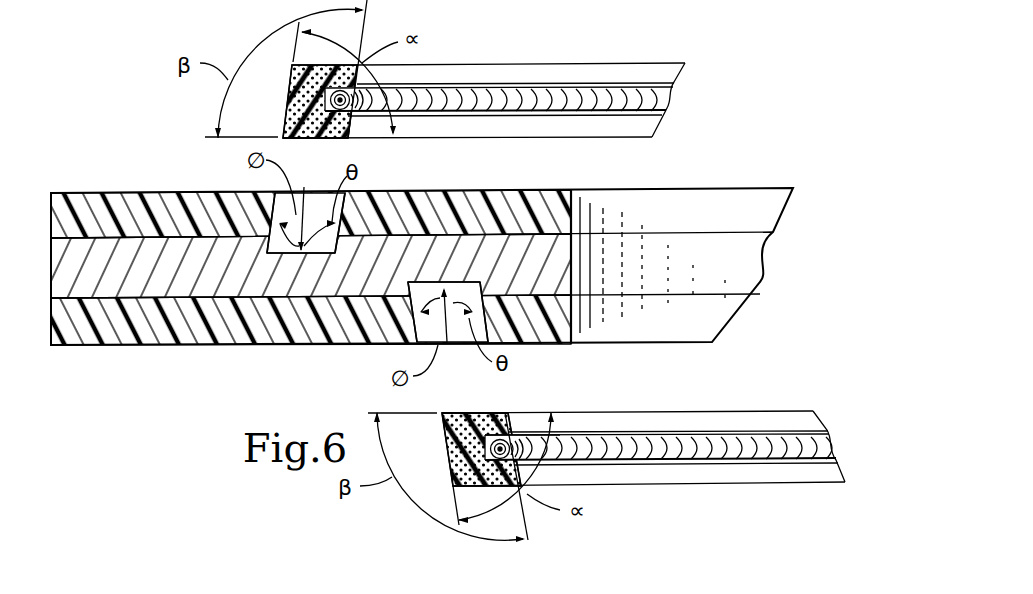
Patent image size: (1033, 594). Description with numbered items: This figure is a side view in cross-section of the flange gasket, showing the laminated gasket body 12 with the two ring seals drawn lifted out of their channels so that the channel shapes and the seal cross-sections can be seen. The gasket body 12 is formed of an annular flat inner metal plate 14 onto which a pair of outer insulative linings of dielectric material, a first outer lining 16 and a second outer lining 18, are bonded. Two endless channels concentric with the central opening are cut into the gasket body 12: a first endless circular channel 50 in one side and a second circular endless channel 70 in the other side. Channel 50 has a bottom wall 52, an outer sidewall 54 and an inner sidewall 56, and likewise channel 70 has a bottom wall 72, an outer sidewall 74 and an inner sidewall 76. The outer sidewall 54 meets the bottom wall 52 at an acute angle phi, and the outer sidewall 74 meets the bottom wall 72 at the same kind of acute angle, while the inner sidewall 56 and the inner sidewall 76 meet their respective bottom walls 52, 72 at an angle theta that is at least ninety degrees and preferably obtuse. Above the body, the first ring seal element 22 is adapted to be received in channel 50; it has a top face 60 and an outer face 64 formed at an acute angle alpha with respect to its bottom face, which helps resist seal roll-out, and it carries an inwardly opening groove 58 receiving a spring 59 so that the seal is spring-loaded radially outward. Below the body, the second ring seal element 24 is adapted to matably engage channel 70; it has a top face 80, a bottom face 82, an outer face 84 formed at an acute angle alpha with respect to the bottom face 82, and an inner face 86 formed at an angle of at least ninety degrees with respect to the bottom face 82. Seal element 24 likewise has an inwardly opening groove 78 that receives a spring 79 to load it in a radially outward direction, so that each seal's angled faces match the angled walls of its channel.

The laminated gasket body 12 is at (185, 175).
The inner metal plate 14 is at (110, 283).
The first outer lining 16 is at (112, 205).
The second outer lining 18 is at (180, 332).
The first ring seal element 22 is at (468, 78).
The second ring seal element 24 is at (633, 470).
The first endless circular channel 50 is at (308, 187).
The bottom wall 52 is at (311, 257).
The outer sidewall 54 is at (263, 190).
The inner sidewall 56 is at (378, 192).
The inwardly opening groove 58 is at (538, 85).
The spring 59 is at (603, 88).
The top face 60 is at (296, 45).
The outer face 64 is at (290, 100).
The second circular endless channel 70 is at (452, 344).
The bottom wall 72 is at (443, 281).
The outer sidewall 74 is at (406, 342).
The inner sidewall 76 is at (522, 340).
The inwardly opening groove 78 is at (700, 462).
The spring 79 is at (767, 462).
The top face 80 is at (457, 512).
The bottom face 82 is at (472, 412).
The outer face 84 is at (447, 442).
The inner face 86 is at (527, 425).